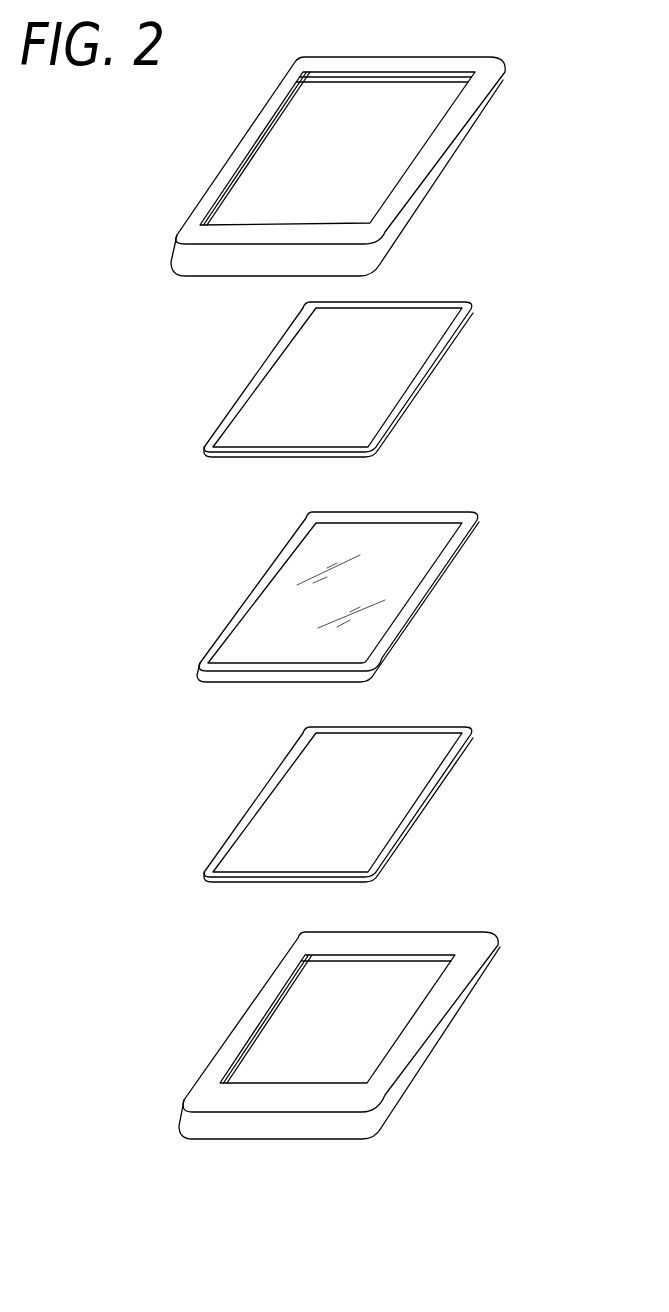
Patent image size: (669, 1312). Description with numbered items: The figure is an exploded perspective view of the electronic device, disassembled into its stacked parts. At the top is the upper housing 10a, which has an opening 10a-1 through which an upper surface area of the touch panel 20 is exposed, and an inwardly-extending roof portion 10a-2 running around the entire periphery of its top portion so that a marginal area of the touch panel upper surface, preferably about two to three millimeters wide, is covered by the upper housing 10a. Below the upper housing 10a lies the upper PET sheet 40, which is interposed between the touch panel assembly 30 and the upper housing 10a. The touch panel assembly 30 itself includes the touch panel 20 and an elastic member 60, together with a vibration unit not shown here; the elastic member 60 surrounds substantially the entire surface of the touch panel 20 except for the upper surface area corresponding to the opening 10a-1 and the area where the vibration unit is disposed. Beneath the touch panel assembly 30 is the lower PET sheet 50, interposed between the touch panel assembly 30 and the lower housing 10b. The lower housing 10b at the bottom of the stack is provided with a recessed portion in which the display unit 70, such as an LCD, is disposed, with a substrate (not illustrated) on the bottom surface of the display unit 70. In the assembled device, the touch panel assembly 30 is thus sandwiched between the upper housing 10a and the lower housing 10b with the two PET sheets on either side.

The upper housing 10a is at (386, 166).
The opening 10a-1 is at (375, 152).
The inwardly-extending roof portion 10a-2 is at (398, 200).
The upper PET sheet 40 is at (442, 343).
The touch panel assembly 30 is at (378, 597).
The touch panel 20 is at (287, 607).
The elastic member 60 is at (410, 613).
The lower PET sheet 50 is at (430, 787).
The display unit 70 is at (305, 1008).
The lower housing 10b is at (361, 1035).